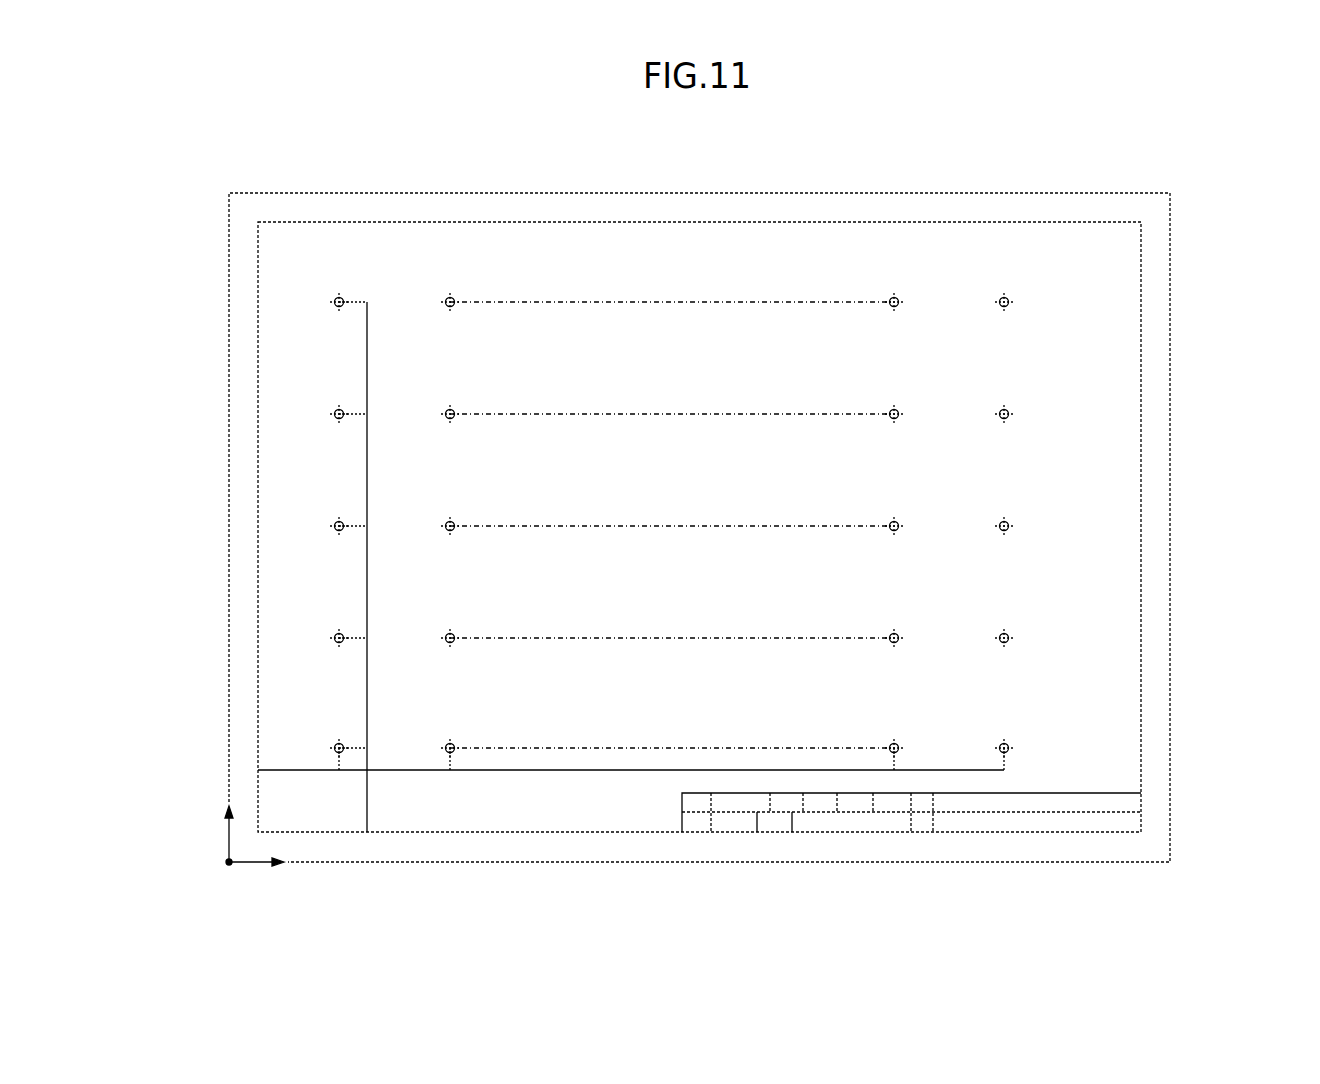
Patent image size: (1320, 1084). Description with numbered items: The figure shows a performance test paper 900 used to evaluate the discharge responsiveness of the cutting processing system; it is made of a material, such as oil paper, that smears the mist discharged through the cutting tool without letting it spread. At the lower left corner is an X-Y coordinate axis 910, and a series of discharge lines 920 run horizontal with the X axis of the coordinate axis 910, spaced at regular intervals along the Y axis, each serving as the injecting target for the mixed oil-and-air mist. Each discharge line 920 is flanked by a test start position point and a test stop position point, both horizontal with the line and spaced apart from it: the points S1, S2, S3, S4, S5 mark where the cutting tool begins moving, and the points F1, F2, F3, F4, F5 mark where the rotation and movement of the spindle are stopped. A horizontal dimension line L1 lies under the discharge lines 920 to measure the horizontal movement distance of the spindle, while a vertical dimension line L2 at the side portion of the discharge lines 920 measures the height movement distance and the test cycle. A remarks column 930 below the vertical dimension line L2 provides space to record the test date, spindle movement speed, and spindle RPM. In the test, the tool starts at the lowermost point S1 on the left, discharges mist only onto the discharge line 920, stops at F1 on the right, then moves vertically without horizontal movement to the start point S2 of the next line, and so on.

The performance test paper 900 is at (1150, 256).
The X-Y coordinate axis 910 is at (226, 864).
The discharge line 920 is at (623, 748).
The remarks column 930 is at (889, 819).
The horizontal dimension line L1 is at (420, 770).
The vertical dimension line L2 is at (365, 690).
The test start position point S1 is at (335, 746).
The test start position point S2 is at (1009, 636).
The test start position point S3 is at (335, 524).
The test start position point S4 is at (1009, 412).
The test start position point S5 is at (335, 300).
The test stop position point F1 is at (1009, 746).
The test stop position point F2 is at (335, 636).
The test stop position point F3 is at (1009, 524).
The test stop position point F4 is at (335, 412).
The test stop position point F5 is at (1002, 298).